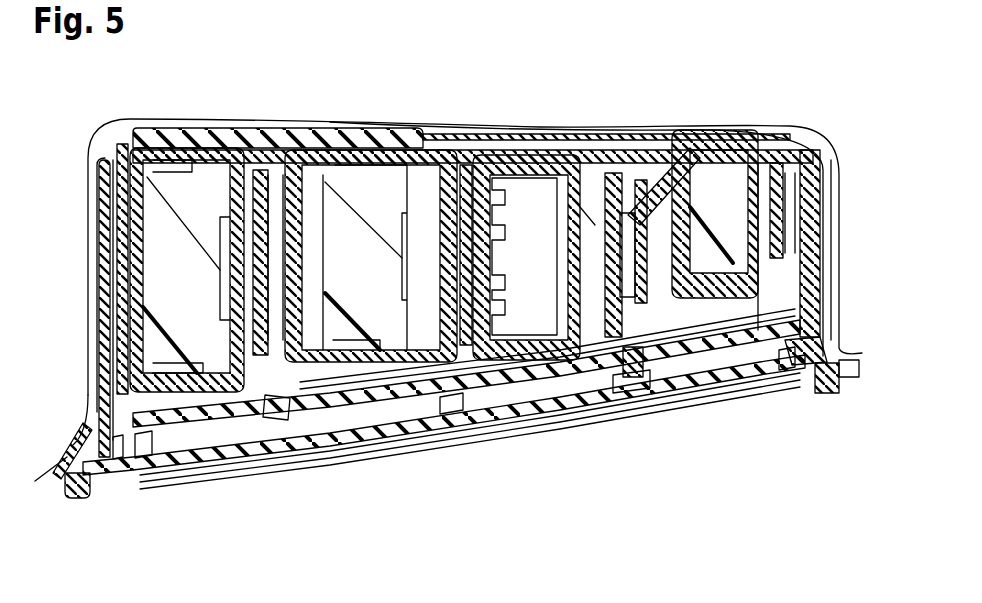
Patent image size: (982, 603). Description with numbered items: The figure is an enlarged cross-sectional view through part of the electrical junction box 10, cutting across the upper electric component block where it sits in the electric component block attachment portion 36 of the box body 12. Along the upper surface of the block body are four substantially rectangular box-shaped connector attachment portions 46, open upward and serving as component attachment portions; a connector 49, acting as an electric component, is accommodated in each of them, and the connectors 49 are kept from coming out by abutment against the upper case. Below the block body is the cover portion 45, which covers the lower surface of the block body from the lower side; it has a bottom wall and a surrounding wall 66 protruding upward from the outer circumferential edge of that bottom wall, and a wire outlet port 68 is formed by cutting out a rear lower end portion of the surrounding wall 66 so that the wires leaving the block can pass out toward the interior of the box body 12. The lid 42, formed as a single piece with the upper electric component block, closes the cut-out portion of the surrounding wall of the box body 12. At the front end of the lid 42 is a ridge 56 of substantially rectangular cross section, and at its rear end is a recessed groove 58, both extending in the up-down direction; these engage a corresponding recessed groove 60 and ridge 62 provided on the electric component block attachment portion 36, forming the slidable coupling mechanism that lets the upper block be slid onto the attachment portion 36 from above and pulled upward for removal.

The electrical junction box 10 is at (464, 52).
The box body 12 is at (490, 90).
The electric component block attachment portion 36 is at (525, 118).
The lid 42 is at (383, 437).
The cover portion 45 is at (207, 143).
The connector attachment portion 46 is at (305, 250).
The connector 49 is at (170, 237).
The ridge 56 is at (97, 465).
The recessed groove 58 is at (812, 373).
The recessed groove 60 is at (85, 447).
The ridge 62 is at (819, 367).
The surrounding wall 66 is at (273, 400).
The wire outlet port 68 is at (430, 147).